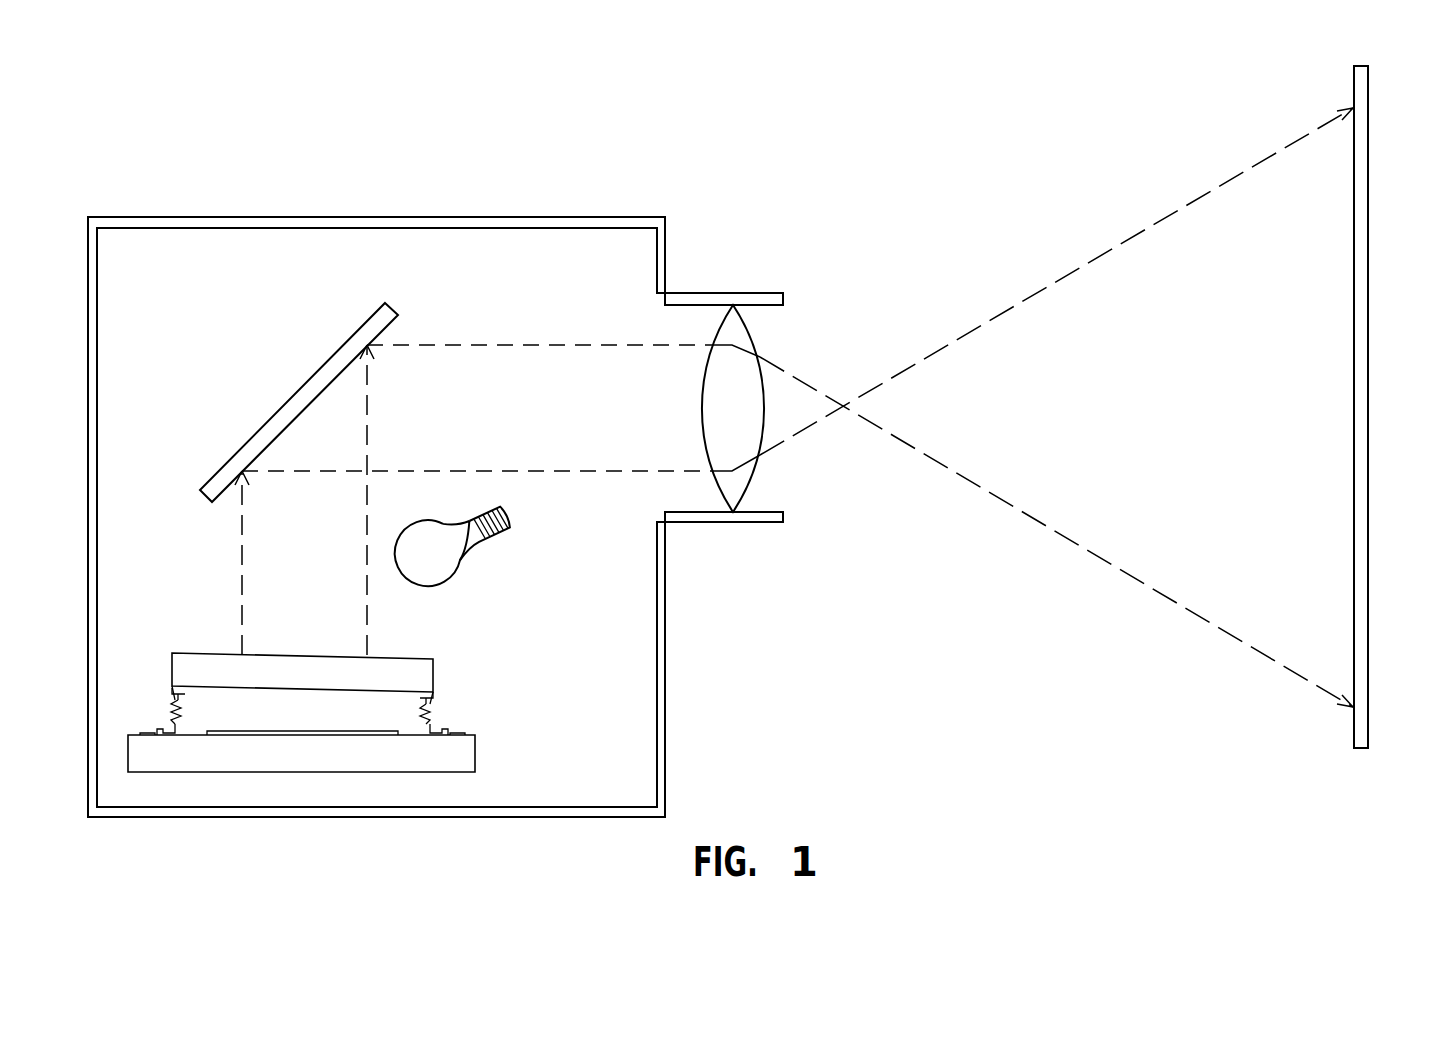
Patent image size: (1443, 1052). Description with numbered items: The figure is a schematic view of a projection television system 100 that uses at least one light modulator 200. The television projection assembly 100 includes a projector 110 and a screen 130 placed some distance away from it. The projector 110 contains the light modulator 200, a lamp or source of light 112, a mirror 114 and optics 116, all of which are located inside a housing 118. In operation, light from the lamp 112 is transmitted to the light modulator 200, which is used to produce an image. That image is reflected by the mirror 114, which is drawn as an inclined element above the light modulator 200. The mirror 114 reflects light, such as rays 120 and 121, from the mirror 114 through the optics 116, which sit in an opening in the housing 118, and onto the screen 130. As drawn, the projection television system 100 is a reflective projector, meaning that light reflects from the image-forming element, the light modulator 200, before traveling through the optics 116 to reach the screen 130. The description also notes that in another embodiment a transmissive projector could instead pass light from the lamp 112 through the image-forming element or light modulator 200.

The projection television system 100 is at (262, 101).
The projector 110 is at (380, 218).
The lamp 112 is at (452, 577).
The mirror 114 is at (292, 397).
The optics 116 is at (702, 408).
The housing 118 is at (668, 665).
The ray 120 is at (552, 344).
The ray 121 is at (535, 470).
The screen 130 is at (1369, 243).
The light modulator 200 is at (207, 653).